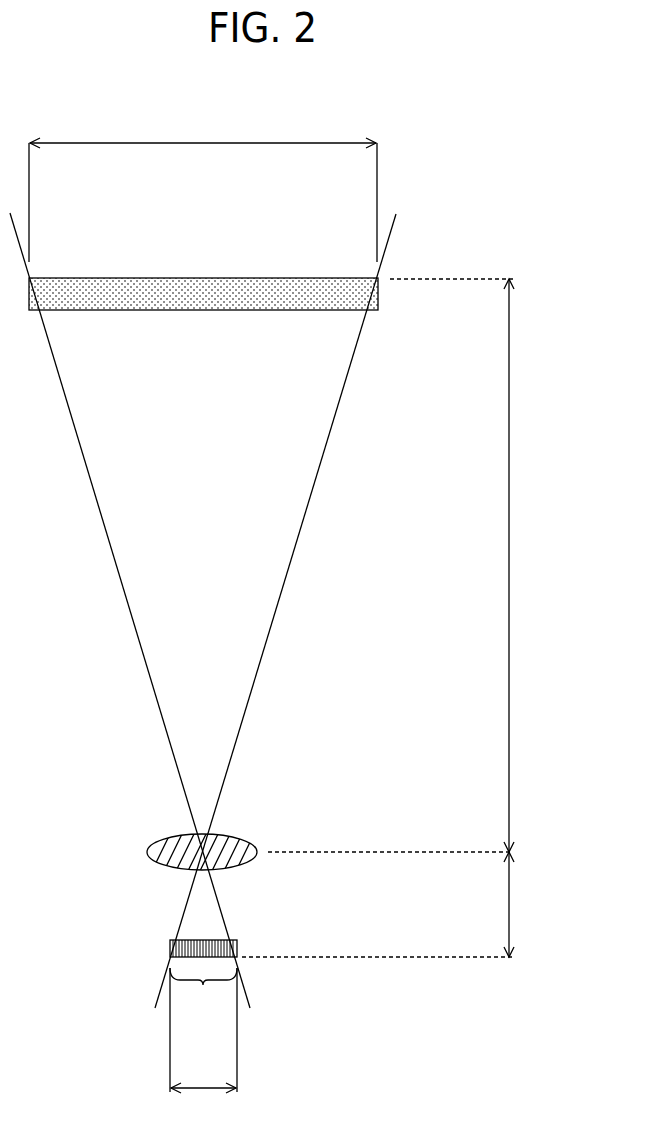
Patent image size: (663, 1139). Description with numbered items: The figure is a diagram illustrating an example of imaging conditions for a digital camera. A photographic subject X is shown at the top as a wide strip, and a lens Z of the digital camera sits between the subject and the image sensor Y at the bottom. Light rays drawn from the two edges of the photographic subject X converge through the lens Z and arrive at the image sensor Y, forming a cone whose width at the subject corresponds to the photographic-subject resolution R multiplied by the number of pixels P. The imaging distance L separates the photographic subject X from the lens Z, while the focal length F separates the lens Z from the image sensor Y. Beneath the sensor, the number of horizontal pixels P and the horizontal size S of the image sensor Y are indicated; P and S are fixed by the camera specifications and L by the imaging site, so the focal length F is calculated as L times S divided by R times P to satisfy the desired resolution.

The photographic subject X is at (202, 278).
The image sensor Y is at (170, 944).
The lens Z is at (147, 852).
The imaging distance L is at (517, 565).
The focal length F is at (517, 904).
The number of horizontal pixels P is at (203, 993).
The horizontal size of image sensor S is at (203, 1030).